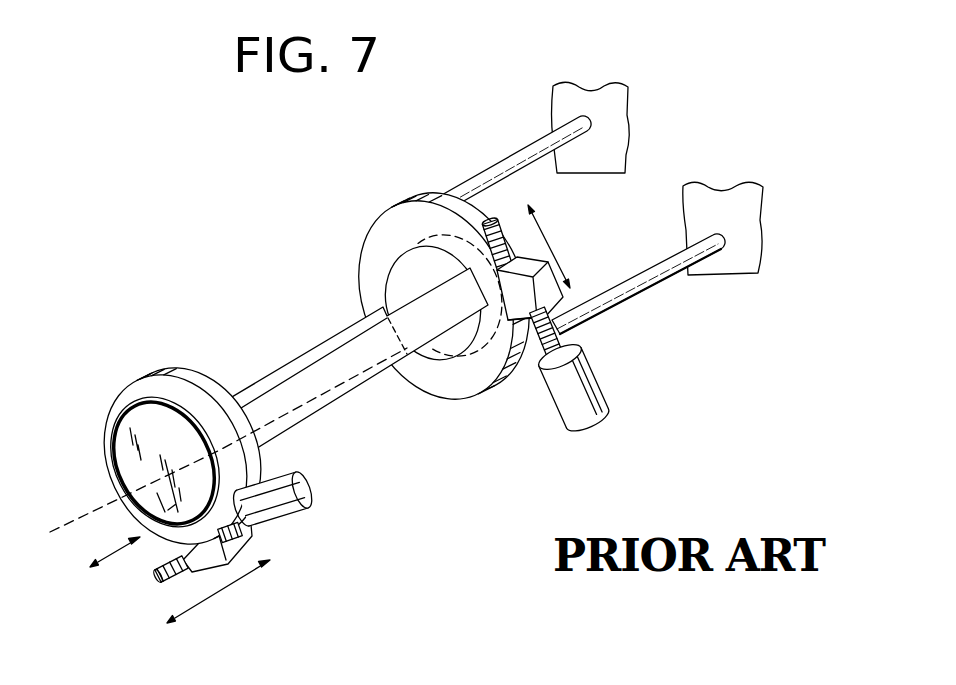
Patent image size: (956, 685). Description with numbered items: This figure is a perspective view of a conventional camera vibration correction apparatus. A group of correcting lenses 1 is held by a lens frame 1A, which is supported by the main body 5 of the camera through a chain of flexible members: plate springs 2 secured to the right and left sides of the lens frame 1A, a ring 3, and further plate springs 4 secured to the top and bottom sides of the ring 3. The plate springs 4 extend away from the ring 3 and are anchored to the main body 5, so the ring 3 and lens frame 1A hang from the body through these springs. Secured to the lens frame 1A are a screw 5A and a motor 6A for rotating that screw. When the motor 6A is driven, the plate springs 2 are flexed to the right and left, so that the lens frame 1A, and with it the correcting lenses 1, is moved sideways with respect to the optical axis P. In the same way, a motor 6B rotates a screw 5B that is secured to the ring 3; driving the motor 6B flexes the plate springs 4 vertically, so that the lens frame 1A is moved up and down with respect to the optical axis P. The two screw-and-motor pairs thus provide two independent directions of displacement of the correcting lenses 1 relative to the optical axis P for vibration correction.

The correcting lenses 1 is at (143, 428).
The lens frame 1A is at (188, 395).
The plate springs 2 is at (307, 355).
The ring 3 is at (382, 250).
The plate springs 4 is at (502, 170).
The main body 5 is at (705, 200).
The screw 5A is at (157, 573).
The screw 5B is at (522, 372).
The motor 6A is at (305, 524).
The motor 6B is at (608, 393).
The optical axis P is at (83, 512).